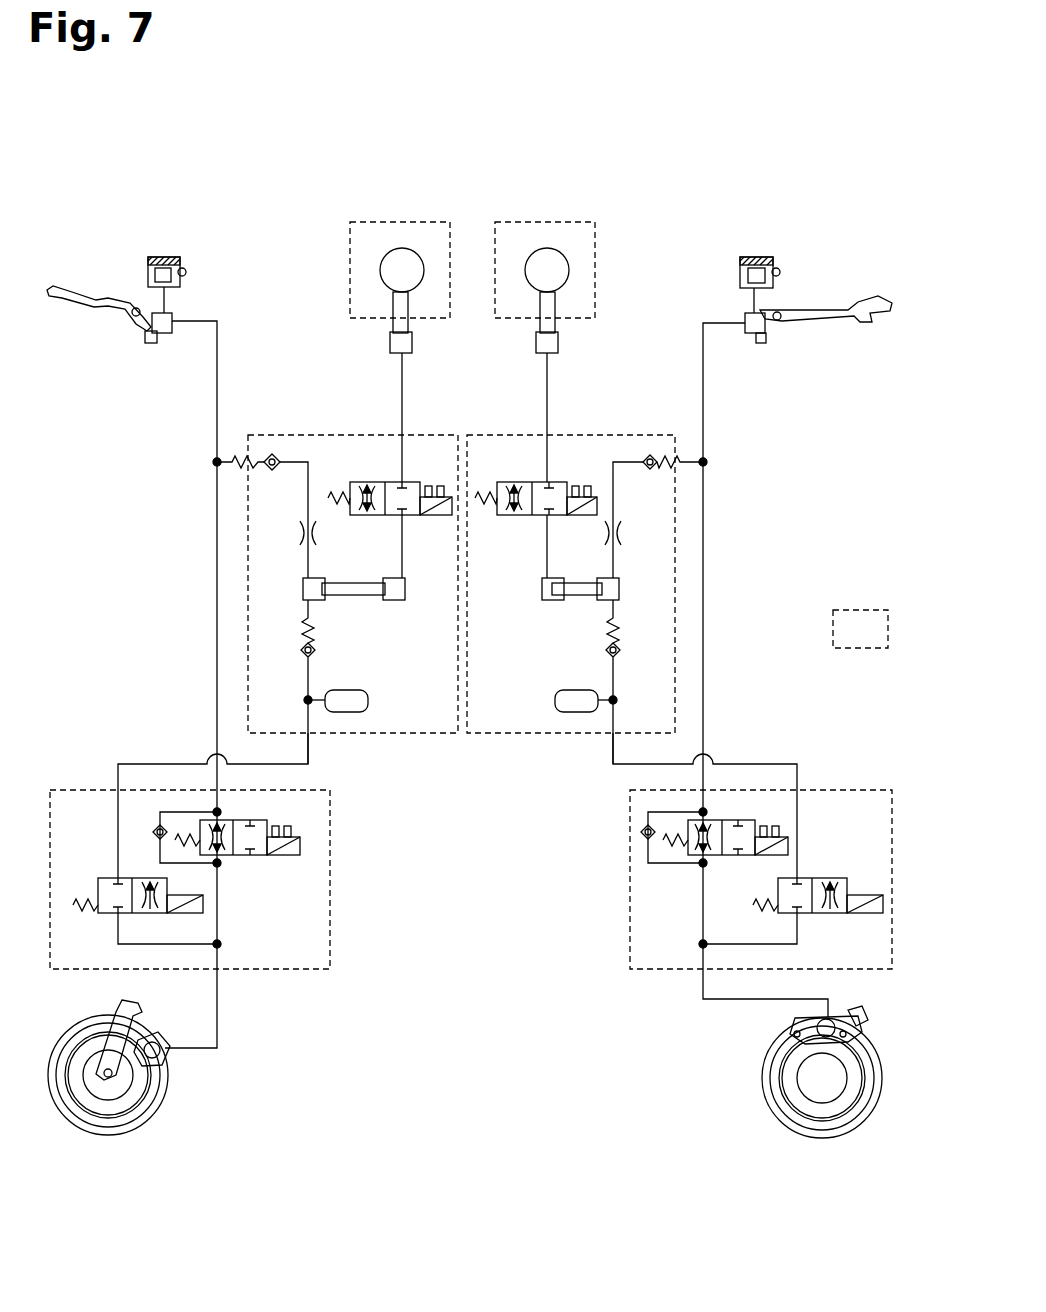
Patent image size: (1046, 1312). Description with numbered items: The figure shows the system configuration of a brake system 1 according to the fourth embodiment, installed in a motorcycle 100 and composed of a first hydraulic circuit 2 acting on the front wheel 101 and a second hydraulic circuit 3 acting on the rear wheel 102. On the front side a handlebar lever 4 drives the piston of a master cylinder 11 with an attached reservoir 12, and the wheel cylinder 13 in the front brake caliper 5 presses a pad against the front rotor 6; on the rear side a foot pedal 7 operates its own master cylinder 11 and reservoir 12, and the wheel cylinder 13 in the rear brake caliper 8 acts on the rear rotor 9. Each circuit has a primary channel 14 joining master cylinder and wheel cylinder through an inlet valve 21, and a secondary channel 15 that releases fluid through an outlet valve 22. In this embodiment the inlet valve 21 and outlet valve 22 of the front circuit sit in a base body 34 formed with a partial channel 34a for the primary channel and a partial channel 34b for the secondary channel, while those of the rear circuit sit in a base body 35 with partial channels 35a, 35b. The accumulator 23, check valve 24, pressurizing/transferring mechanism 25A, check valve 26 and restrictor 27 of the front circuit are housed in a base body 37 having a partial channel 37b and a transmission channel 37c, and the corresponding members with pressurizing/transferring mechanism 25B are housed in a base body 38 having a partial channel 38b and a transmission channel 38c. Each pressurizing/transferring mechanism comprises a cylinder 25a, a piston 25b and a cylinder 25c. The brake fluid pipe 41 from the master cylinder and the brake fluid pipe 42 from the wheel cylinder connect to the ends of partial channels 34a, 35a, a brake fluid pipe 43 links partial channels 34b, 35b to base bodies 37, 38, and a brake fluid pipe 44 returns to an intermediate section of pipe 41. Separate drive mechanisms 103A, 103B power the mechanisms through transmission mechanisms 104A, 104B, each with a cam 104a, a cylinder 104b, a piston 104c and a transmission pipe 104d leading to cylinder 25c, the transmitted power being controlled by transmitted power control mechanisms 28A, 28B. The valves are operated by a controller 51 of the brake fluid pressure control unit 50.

The motorcycle 100 is at (880, 118).
The brake system 1 is at (850, 198).
The first hydraulic circuit 2 is at (236, 245).
The second hydraulic circuit 3 is at (712, 245).
The handlebar lever 4 is at (72, 290).
The front brake caliper 5 is at (152, 1034).
The front rotor 6 is at (140, 1098).
The foot pedal 7 is at (868, 296).
The rear brake caliper 8 is at (866, 1016).
The rear rotor 9 is at (780, 1105).
The master cylinder 11 is at (162, 333).
The reservoir 12 is at (168, 256).
The wheel cylinder 13 is at (165, 1040).
The primary channel 14 is at (200, 713).
The secondary channel 15 is at (158, 752).
The inlet valve 21 is at (270, 855).
The outlet valve 22 is at (110, 878).
The accumulator 23 is at (345, 690).
The check valve 24 is at (300, 648).
The pressurizing/transferring mechanism 25A is at (393, 626).
The pressurizing/transferring mechanism 25B is at (525, 628).
The cylinder 25a is at (303, 583).
The piston 25b is at (350, 598).
The cylinder 25c is at (405, 598).
The check valve 26 is at (274, 470).
The restrictor 27 is at (298, 533).
The transmitted power control mechanism 28A is at (418, 515).
The transmitted power control mechanism 28B is at (515, 482).
The base body 34 is at (85, 788).
The partial channel 34a is at (222, 920).
The partial channel 34b is at (118, 930).
The base body 35 is at (858, 788).
The partial channel 35a is at (700, 905).
The partial channel 35b is at (797, 828).
The base body 37 is at (283, 433).
The partial channel 37b is at (308, 490).
The transmission channel 37c is at (400, 555).
The base body 38 is at (632, 433).
The partial channel 38b is at (613, 490).
The transmission channel 38c is at (545, 540).
The brake fluid pipe 41 is at (222, 330).
The brake fluid pipe 42 is at (222, 1000).
The brake fluid pipe 43 is at (118, 760).
The brake fluid pipe 44 is at (230, 458).
The brake fluid pressure control unit 50 is at (125, 596).
The controller 51 is at (862, 608).
The front wheel 101 is at (105, 1132).
The rear wheel 102 is at (842, 1128).
The drive mechanism 103A is at (418, 222).
The drive mechanism 103B is at (568, 222).
The transmission mechanism 104A is at (393, 235).
The transmission mechanism 104B is at (540, 235).
The cam 104a is at (395, 272).
The cylinder 104b is at (392, 325).
The piston 104c is at (440, 344).
The transmission pipe 104d is at (400, 378).